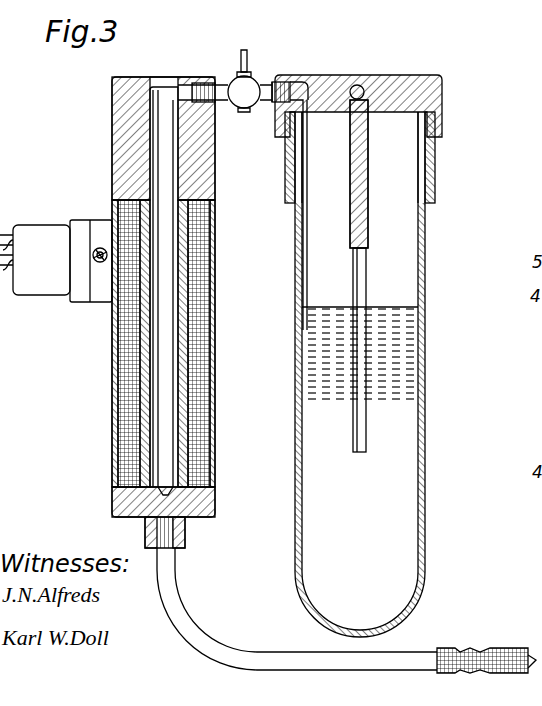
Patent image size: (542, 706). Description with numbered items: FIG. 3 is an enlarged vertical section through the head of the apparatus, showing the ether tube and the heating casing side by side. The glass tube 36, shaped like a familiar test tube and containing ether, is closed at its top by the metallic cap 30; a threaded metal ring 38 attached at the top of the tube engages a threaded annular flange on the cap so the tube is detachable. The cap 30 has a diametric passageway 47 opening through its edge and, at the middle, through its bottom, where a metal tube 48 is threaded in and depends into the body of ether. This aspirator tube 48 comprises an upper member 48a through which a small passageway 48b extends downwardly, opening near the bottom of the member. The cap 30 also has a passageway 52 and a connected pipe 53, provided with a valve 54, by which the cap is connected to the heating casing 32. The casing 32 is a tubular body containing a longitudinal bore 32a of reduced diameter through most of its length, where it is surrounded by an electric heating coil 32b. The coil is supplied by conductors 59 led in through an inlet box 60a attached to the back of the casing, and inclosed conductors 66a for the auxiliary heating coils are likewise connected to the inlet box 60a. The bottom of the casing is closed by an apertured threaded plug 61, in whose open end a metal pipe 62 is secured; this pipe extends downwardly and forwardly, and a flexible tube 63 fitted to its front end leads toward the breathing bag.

The cap 30 is at (427, 72).
The casing 32 is at (221, 180).
The bore 32a is at (160, 160).
The electric heating coil 32b is at (214, 315).
The glass tube 36 is at (426, 398).
The threaded metal ring 38 is at (437, 160).
The diametric passageway 47 is at (362, 86).
The aspirator tube 48 is at (376, 231).
The upper member 48a is at (368, 172).
The small passageway 48b is at (368, 276).
The passageway 52 is at (312, 84).
The pipe 53 is at (282, 82).
The valve 54 is at (250, 72).
The conductors 59 is at (4, 242).
The inlet box 60a is at (47, 245).
The threaded plug 61 is at (195, 508).
The metal pipe 62 is at (224, 650).
The flexible tube 63 is at (485, 650).
The inclosed conductors 66a is at (94, 262).